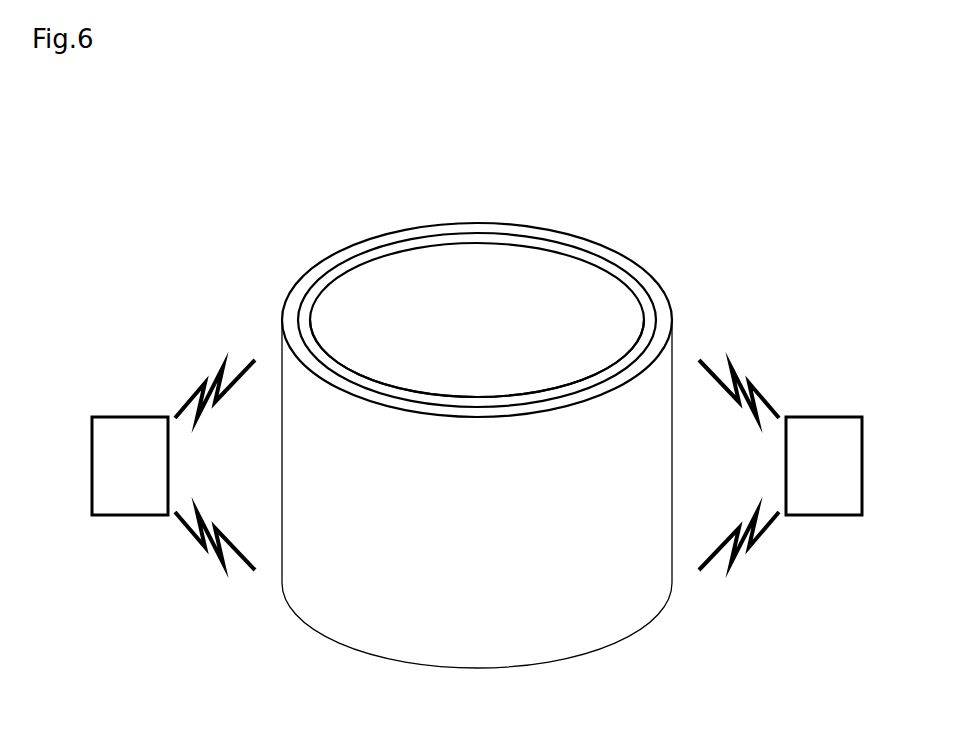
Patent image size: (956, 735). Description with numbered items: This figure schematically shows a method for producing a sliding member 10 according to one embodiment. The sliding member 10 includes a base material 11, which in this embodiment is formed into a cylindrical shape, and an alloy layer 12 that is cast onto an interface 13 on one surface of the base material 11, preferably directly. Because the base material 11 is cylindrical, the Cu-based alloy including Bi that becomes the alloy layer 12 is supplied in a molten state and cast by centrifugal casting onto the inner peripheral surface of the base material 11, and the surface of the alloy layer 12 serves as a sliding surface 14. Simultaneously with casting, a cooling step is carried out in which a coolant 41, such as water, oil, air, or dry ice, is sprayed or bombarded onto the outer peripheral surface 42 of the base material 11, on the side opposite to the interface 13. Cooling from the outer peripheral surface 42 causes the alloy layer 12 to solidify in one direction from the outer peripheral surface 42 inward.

The sliding member 10 is at (329, 220).
The base material 11 is at (351, 259).
The alloy layer 12 is at (461, 243).
The interface 13 is at (508, 243).
The sliding surface 14 is at (579, 270).
The coolant 41 is at (241, 364).
The outer peripheral surface 42 is at (281, 535).